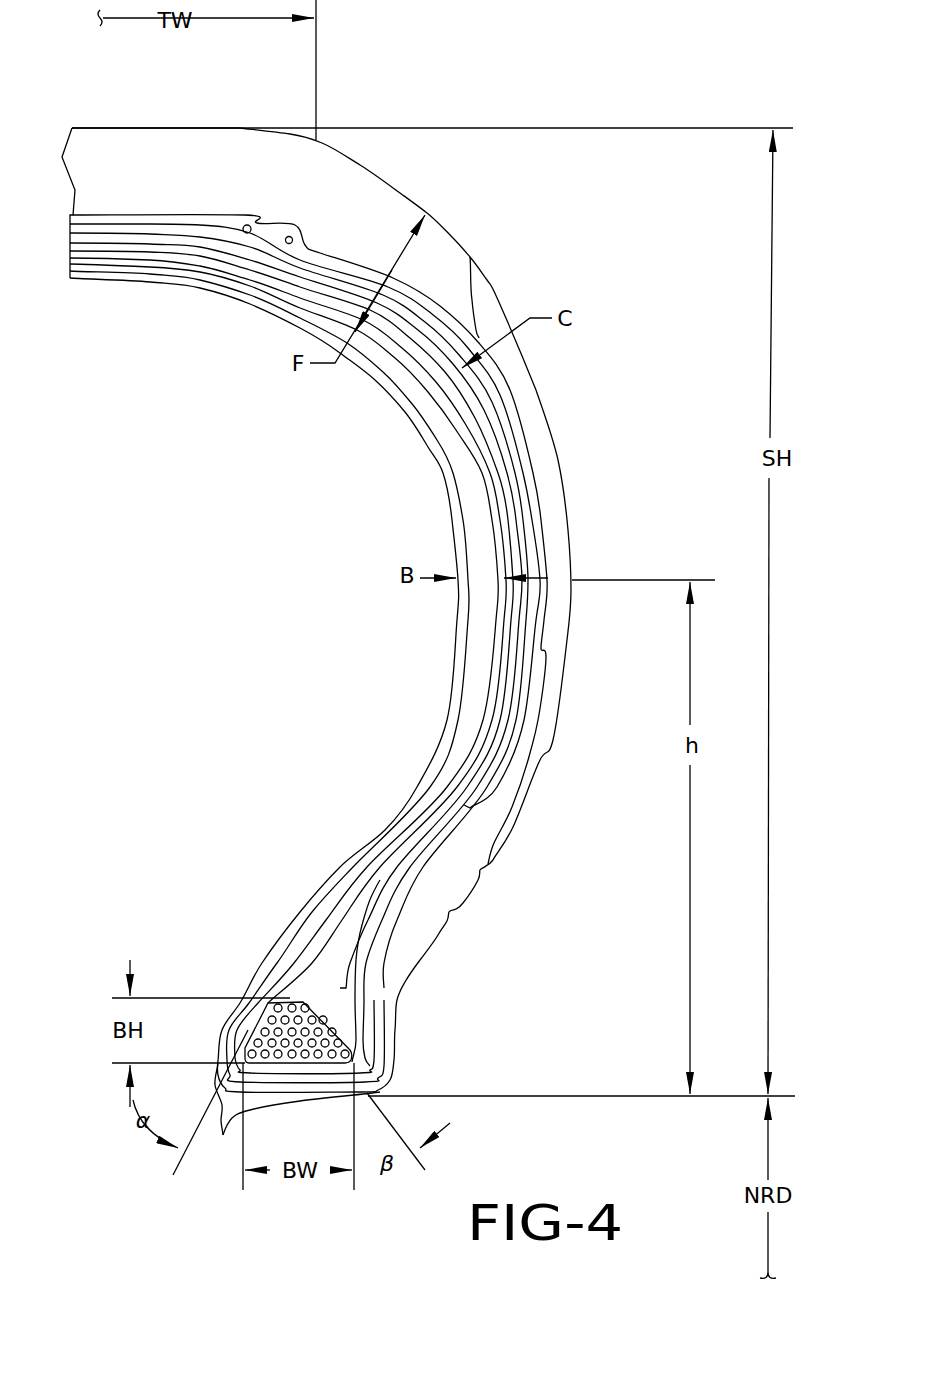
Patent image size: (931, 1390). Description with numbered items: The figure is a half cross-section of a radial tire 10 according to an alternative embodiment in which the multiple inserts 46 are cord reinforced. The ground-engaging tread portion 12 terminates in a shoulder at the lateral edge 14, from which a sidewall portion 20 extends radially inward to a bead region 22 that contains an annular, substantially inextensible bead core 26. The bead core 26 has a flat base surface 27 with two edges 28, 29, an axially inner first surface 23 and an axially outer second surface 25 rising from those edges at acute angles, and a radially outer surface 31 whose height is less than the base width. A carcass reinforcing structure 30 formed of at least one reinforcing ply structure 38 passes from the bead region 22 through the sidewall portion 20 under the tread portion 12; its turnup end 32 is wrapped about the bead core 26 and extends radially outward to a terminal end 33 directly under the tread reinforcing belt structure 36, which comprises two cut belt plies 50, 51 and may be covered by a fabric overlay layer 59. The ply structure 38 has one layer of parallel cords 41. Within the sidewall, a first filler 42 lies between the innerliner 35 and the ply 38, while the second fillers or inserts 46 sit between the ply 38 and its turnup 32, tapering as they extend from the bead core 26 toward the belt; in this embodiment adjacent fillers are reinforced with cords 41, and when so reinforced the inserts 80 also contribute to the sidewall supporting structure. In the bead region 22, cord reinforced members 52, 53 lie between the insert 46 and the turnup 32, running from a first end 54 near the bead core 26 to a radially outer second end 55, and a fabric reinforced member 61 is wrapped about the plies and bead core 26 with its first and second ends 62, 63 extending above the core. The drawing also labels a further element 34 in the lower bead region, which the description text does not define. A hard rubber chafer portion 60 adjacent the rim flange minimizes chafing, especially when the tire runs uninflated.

The tire 10 is at (358, 98).
The tread portion 12 is at (85, 212).
The lateral edge of the tread 14 is at (326, 143).
The sidewall portion 20 is at (572, 533).
The bead region 22 is at (312, 962).
The axially inner first surface 23 is at (243, 1030).
The axially outer second surface 25 is at (355, 1040).
The bead core 26 is at (290, 1030).
The flat base surface 27 is at (330, 1064).
The edge of the flat base surface 28 is at (247, 1064).
The edge of the flat base surface 29 is at (368, 1073).
The carcass reinforcing structure 30 is at (150, 276).
The radially outer surface of the bead core 31 is at (318, 1007).
The turnup end 32 is at (510, 432).
The terminal end of the turnup 33 is at (103, 266).
The rim strip 34 is at (410, 908).
The innerliner 35 is at (337, 870).
The tread reinforcing belt structure 36 is at (147, 218).
The reinforcing ply structure 38 is at (472, 445).
The cords 41 is at (438, 387).
The first filler 42 is at (480, 543).
The elastomeric inserts (second fillers) 46 is at (503, 497).
The belt ply 50 is at (229, 233).
The belt ply 51 is at (227, 262).
The axially outer cord reinforced component 52 is at (439, 860).
The axially inner cord reinforced component 53 is at (448, 833).
The first end of the cord reinforced member 54 is at (350, 1032).
The second end of the cord reinforced member 55 is at (466, 811).
The fabric overlay layer 59 is at (192, 226).
The hard rubber chafer portion 60 is at (435, 942).
The fabric reinforced member 61 is at (257, 975).
The first end of the fabric reinforced member 62 is at (312, 912).
The second end of the fabric reinforced member 63 is at (380, 995).
The reinforced inserts 80 is at (480, 402).